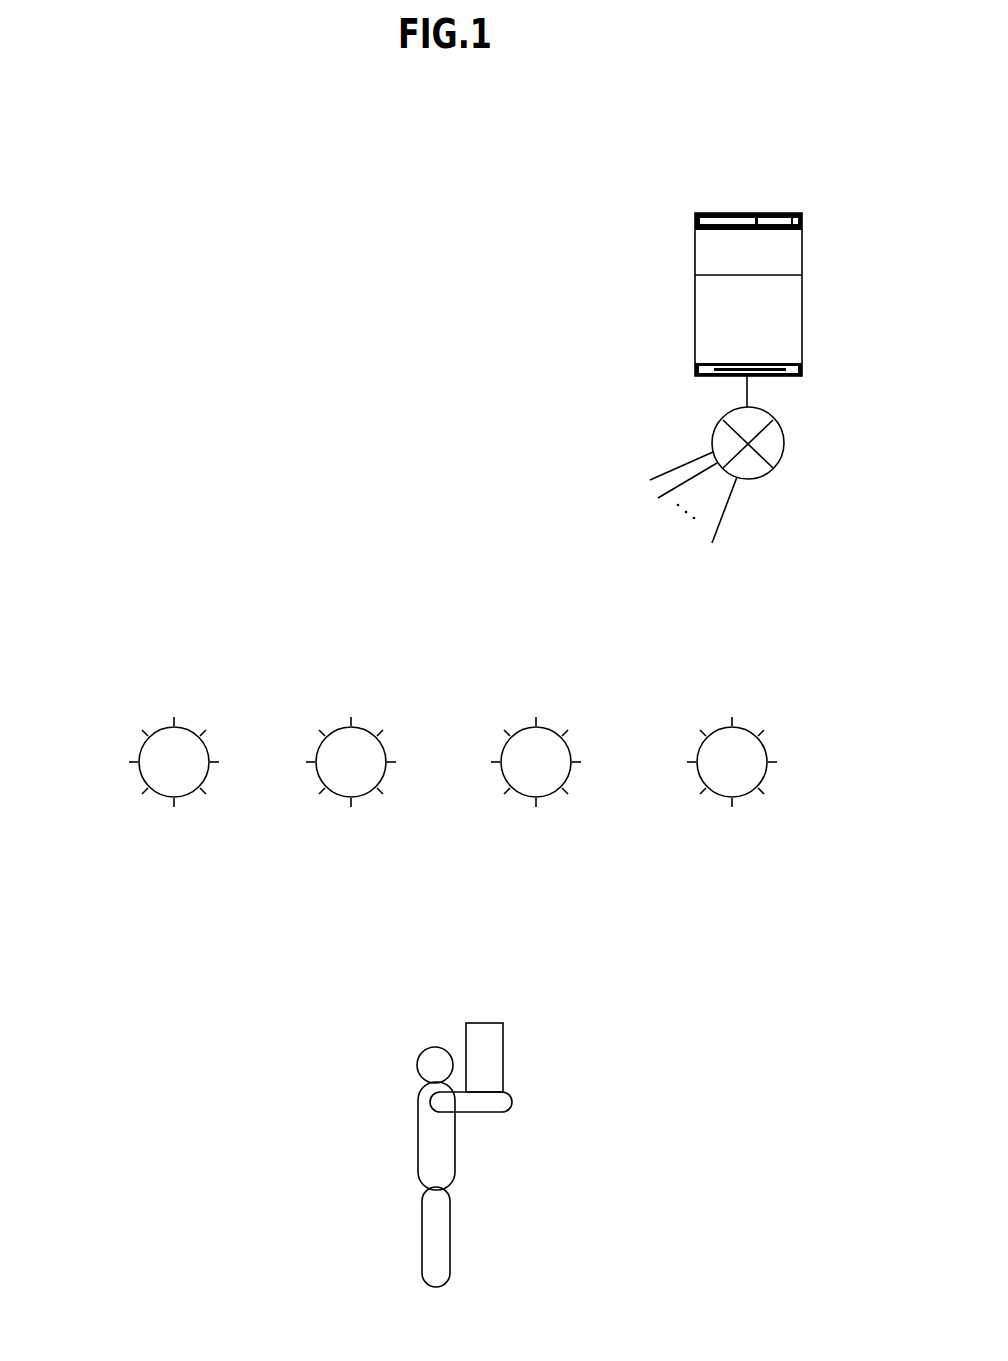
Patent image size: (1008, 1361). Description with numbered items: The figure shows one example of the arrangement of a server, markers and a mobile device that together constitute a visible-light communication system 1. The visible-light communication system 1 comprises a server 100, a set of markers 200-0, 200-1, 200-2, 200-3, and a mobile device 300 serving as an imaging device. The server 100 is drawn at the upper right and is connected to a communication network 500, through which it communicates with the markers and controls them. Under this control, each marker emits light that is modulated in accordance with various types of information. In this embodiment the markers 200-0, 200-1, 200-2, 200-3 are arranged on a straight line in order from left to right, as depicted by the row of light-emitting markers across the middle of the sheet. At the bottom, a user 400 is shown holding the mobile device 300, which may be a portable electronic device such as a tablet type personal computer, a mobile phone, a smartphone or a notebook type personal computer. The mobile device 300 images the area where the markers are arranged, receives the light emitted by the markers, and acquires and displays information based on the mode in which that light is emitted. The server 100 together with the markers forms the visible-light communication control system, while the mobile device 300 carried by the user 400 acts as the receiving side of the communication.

The visible-light communication system 1 is at (372, 230).
The server 100 is at (780, 258).
The communication network 500 is at (785, 435).
The marker 200-0 is at (140, 753).
The marker 200-1 is at (317, 753).
The marker 200-2 is at (502, 753).
The marker 200-3 is at (699, 752).
The mobile device 300 is at (503, 1048).
The user 400 is at (436, 1180).